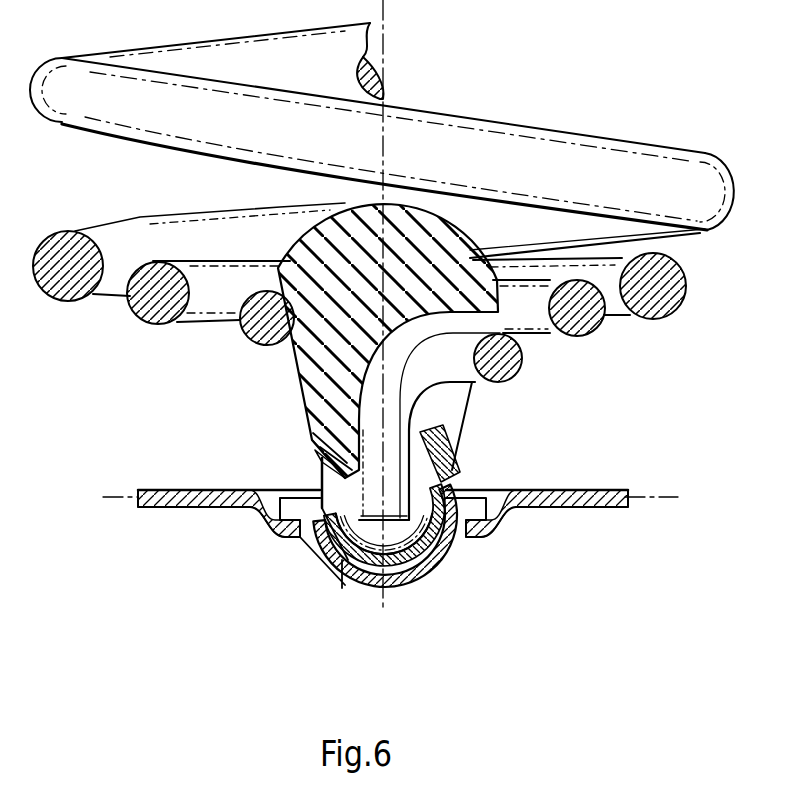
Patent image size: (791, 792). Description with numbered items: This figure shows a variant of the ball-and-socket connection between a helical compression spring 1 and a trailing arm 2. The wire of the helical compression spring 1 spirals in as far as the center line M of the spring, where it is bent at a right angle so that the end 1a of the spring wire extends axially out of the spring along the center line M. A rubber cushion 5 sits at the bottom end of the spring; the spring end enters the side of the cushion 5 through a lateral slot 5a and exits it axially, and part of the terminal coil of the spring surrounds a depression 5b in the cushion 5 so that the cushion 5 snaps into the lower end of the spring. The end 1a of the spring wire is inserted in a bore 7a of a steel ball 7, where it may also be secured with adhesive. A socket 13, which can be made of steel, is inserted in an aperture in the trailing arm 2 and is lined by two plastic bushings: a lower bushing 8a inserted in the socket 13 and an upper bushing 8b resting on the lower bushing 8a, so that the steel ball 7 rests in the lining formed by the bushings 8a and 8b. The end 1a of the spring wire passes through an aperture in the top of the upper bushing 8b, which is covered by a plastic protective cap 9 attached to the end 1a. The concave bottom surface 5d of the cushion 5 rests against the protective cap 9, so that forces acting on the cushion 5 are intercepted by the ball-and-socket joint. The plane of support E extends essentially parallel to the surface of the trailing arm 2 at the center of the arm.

The helical compression spring 1 is at (500, 137).
The end of the spring wire 1a is at (395, 490).
The trailing arm 2 is at (560, 490).
The rubber cushion 5 is at (307, 360).
The lateral slot 5a is at (450, 404).
The depression 5b is at (243, 330).
The concave bottom surface 5d is at (316, 430).
The steel ball 7 is at (426, 583).
The bore 7a is at (383, 590).
The lower bushing 8a is at (344, 582).
The upper bushing 8b is at (318, 485).
The protective cap 9 is at (320, 462).
The socket 13 is at (447, 553).
The center line of the spring M is at (387, 63).
The plane of support E is at (660, 500).